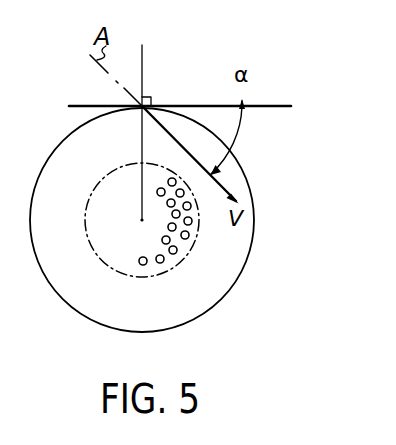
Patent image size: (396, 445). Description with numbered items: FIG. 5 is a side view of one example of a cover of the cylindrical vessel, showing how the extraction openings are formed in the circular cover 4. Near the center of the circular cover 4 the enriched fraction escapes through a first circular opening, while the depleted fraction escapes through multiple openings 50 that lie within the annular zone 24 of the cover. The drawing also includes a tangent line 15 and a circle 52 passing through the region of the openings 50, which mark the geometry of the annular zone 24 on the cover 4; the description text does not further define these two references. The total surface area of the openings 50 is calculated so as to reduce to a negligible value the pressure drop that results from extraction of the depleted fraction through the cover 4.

The tangent reference surface line 15 is at (276, 106).
The circular cover 4 is at (246, 180).
The pitch circle of openings 52 is at (203, 229).
The annular zone 24 is at (211, 247).
The openings 50 is at (187, 219).